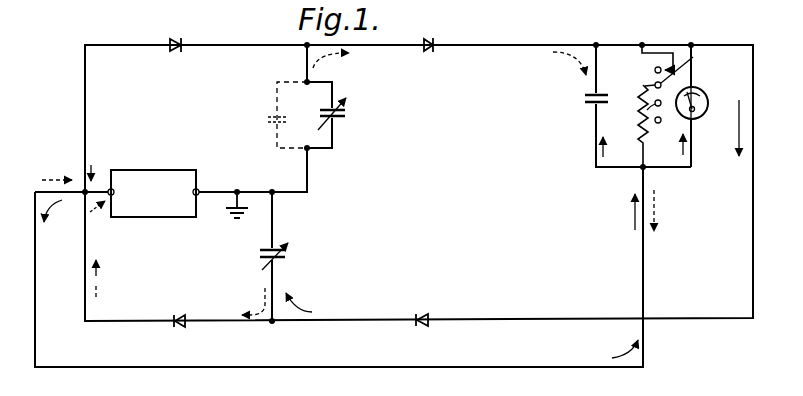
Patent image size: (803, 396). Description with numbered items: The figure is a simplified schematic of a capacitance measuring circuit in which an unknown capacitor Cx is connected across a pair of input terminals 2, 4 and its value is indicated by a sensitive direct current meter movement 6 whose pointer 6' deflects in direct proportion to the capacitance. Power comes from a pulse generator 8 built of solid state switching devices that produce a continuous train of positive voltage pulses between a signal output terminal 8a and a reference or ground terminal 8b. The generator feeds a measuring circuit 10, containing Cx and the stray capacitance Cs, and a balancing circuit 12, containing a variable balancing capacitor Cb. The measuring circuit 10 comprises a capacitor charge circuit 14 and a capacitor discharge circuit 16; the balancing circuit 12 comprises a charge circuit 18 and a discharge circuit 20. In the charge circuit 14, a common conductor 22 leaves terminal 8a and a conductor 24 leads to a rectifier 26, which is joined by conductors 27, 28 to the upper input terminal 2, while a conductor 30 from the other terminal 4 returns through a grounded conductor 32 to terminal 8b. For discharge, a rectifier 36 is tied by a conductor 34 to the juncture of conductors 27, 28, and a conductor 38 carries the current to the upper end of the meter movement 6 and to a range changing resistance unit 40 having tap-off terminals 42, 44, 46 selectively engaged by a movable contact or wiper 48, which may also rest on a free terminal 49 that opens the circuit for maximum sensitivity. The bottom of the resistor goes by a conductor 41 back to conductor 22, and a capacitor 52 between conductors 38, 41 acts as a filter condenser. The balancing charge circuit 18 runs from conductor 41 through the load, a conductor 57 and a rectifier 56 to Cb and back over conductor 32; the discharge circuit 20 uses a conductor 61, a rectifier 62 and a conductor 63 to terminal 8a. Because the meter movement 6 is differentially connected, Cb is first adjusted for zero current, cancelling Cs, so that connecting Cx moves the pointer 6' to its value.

The input terminal 2 is at (305, 80).
The input terminal 4 is at (310, 150).
The direct current meter movement 6 is at (700, 115).
The pointer 6' is at (711, 94).
The pulse generator 8 is at (164, 170).
The signal output terminal 8a is at (110, 189).
The reference or ground terminal 8b is at (198, 196).
The measuring circuit 10 is at (82, 88).
The balancing circuit 12 is at (82, 266).
The capacitor charge circuit 14 is at (157, 107).
The capacitor discharge circuit 16 is at (449, 109).
The charge circuit 18 is at (289, 359).
The discharge circuit 20 is at (145, 273).
The common conductor 22 is at (96, 198).
The conductor 24 is at (86, 113).
The rectifier 26 is at (178, 40).
The conductor 27 is at (230, 52).
The conductor 28 is at (270, 60).
The conductor 30 is at (307, 178).
The grounded conductor 32 is at (218, 191).
The conductor 34 is at (390, 51).
The rectifier 36 is at (434, 48).
The conductor 38 is at (538, 46).
The range changing resistance unit 40 is at (639, 111).
The conductor 41 is at (640, 258).
The tap-off terminal 42 is at (641, 51).
The tap-off terminal 44 is at (661, 121).
The tap-off terminal 46 is at (656, 123).
The movable contact or wiper 48 is at (662, 53).
The free terminal 49 is at (652, 72).
The capacitor 52 is at (581, 101).
The rectifier 56 is at (420, 313).
The conductor 57 is at (753, 212).
The conductor 61 is at (226, 325).
The rectifier 62 is at (172, 327).
The conductor 63 is at (85, 311).